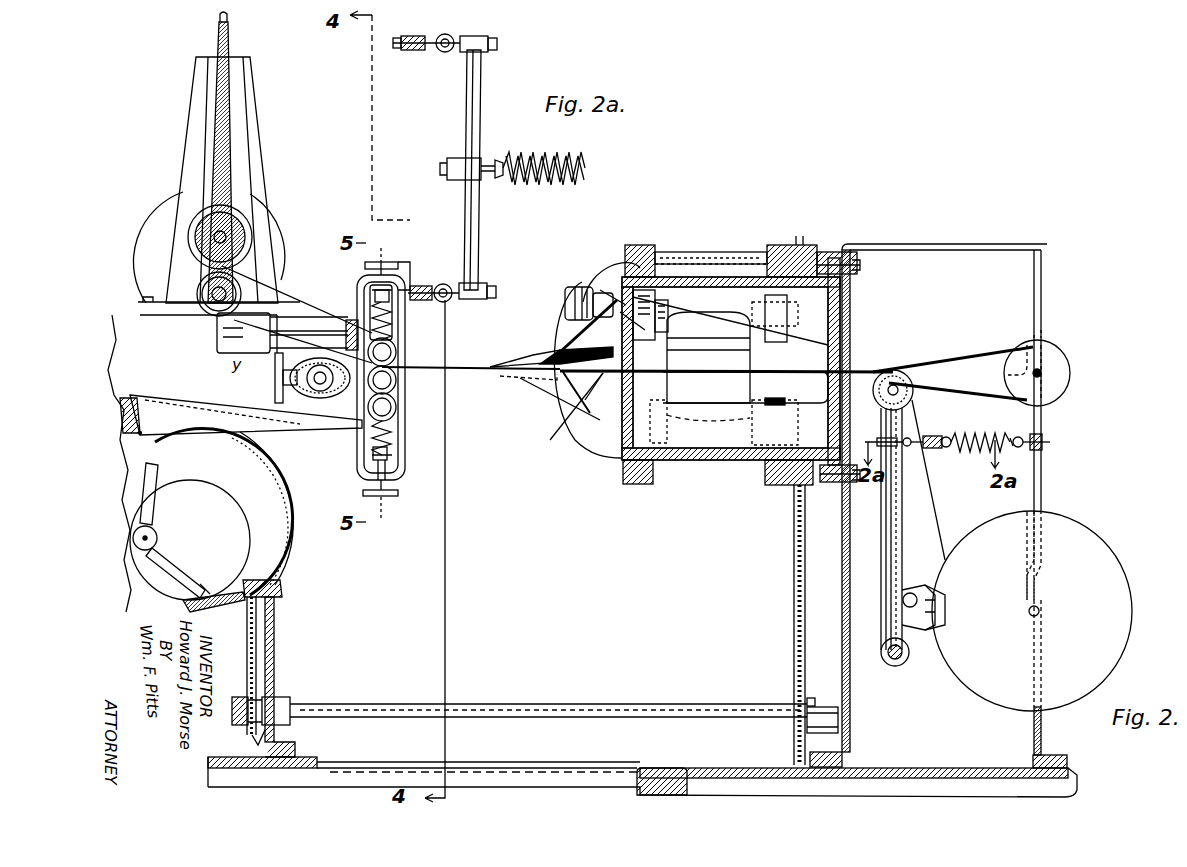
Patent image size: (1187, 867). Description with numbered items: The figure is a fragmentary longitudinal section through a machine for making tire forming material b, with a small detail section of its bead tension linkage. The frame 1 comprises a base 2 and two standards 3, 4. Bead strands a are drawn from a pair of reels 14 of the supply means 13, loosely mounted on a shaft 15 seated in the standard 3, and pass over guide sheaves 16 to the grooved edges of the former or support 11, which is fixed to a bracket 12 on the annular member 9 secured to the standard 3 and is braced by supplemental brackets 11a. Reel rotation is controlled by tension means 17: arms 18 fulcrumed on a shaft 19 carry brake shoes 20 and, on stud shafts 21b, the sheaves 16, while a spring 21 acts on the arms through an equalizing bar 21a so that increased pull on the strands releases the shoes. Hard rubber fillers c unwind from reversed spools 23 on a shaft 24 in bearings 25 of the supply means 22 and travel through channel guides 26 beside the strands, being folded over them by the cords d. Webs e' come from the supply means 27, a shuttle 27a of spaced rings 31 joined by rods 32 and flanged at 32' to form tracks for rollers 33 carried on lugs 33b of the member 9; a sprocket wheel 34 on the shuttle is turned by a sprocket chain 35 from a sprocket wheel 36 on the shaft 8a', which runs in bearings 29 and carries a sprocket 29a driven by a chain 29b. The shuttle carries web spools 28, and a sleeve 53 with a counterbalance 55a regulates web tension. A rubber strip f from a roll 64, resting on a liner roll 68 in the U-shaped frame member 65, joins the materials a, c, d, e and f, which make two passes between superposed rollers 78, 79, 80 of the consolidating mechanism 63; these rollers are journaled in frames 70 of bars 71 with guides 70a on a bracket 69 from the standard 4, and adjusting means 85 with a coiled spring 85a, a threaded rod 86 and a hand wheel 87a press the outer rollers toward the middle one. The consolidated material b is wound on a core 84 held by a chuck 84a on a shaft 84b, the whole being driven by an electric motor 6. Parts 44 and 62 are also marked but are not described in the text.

In FIG. 2, the frame 1 is at (956, 506).
In FIG. 2, the base 2 is at (730, 768).
In FIG. 2, the standard 3 is at (892, 756).
In FIG. 2, the standard 4 is at (275, 656).
In FIG. 2, the electric motor 6 is at (166, 186).
In FIG. 2, the shaft 8a' is at (548, 697).
In FIG. 2, the annular member 9 is at (728, 464).
In FIG. 2, the support 11 is at (653, 421).
In FIG. 2, the supplemental brackets 11a is at (578, 330).
In FIG. 2, the bracket 12 is at (548, 435).
In FIG. 2, the supply means 13 is at (1032, 609).
In FIG. 2, the reels 14 is at (1120, 592).
In FIG. 2, the shaft 15 is at (1040, 612).
In FIG. 2, the guide sheaves 16 is at (887, 398).
In FIG. 2A, the tension means 17 is at (480, 184).
In FIG. 2, the tension means 17 is at (989, 458).
In FIG. 2A, the arms 18 is at (420, 56).
In FIG. 2, the arms 18 is at (881, 560).
In FIG. 2, the shaft 19 is at (898, 664).
In FIG. 2, the shoes 20 is at (930, 615).
In FIG. 2A, the spring 21 is at (545, 184).
In FIG. 2, the spring 21 is at (992, 434).
In FIG. 2A, the equalizing bar 21a is at (482, 80).
In FIG. 2, the equalizing bar 21a is at (934, 436).
In FIG. 2, the stud shaft 21b is at (927, 442).
In FIG. 2, the supply means 22 is at (1047, 363).
In FIG. 2, the spools 23 is at (1055, 390).
In FIG. 2, the shaft 24 is at (1042, 373).
In FIG. 2, the bearings 25 is at (1004, 348).
In FIG. 2, the guides 26 is at (660, 330).
In FIG. 2, the supply means 27 is at (708, 428).
In FIG. 2, the shuttle 27a is at (640, 484).
In FIG. 2, the spools 28 is at (594, 281).
In FIG. 2, the bearings 29 is at (274, 700).
In FIG. 2, the sprocket 29a is at (274, 732).
In FIG. 2, the driving chain 29b is at (256, 636).
In FIG. 2, the rings 31 is at (642, 246).
In FIG. 2, the rods 32 is at (711, 240).
In FIG. 2, the flanges 32' is at (685, 351).
In FIG. 2, the rollers 33 is at (660, 306).
In FIG. 2, the lugs 33b is at (625, 300).
In FIG. 2, the sprocket wheel 34 is at (826, 252).
In FIG. 2, the sprocket chain 35 is at (792, 622).
In FIG. 2, the sprocket wheel 36 is at (794, 700).
In FIG. 2, the loop 44 is at (582, 437).
In FIG. 2, the sleeve 53 is at (622, 312).
In FIG. 2, the counterbalance 55a is at (565, 303).
In FIG. 2, the roller pin 62 is at (263, 240).
In FIG. 2, the consolidating mechanism 63 is at (398, 336).
In FIG. 2, the roll 64 is at (247, 230).
In FIG. 2, the frame member 65 is at (256, 146).
In FIG. 2, the roll 68 is at (212, 315).
In FIG. 2, the bracket 69 is at (322, 332).
In FIG. 2, the frames 70 is at (404, 474).
In FIG. 2, the guides 70a is at (406, 340).
In FIG. 2, the bars 71 is at (402, 450).
In FIG. 2, the roller 78 is at (397, 352).
In FIG. 2, the roller 79 is at (397, 380).
In FIG. 2, the roller 80 is at (397, 407).
In FIG. 2, the core 84 is at (296, 556).
In FIG. 2, the chuck 84a is at (190, 523).
In FIG. 2, the shaft 84b is at (157, 536).
In FIG. 2, the adjusting means 85 is at (392, 490).
In FIG. 2, the coiled spring 85a is at (392, 450).
In FIG. 2, the rod 86 is at (398, 494).
In FIG. 2, the hand wheel 87a is at (390, 498).
In FIG. 2, the bead material a is at (952, 508).
In FIG. 2, the tire forming material b is at (212, 404).
In FIG. 2, the fillers c is at (958, 348).
In FIG. 2, the cords d is at (470, 365).
In FIG. 2, the web material e is at (525, 354).
In FIG. 2, the corded rubber web e' is at (549, 364).
In FIG. 2, the rubber strip f is at (240, 352).